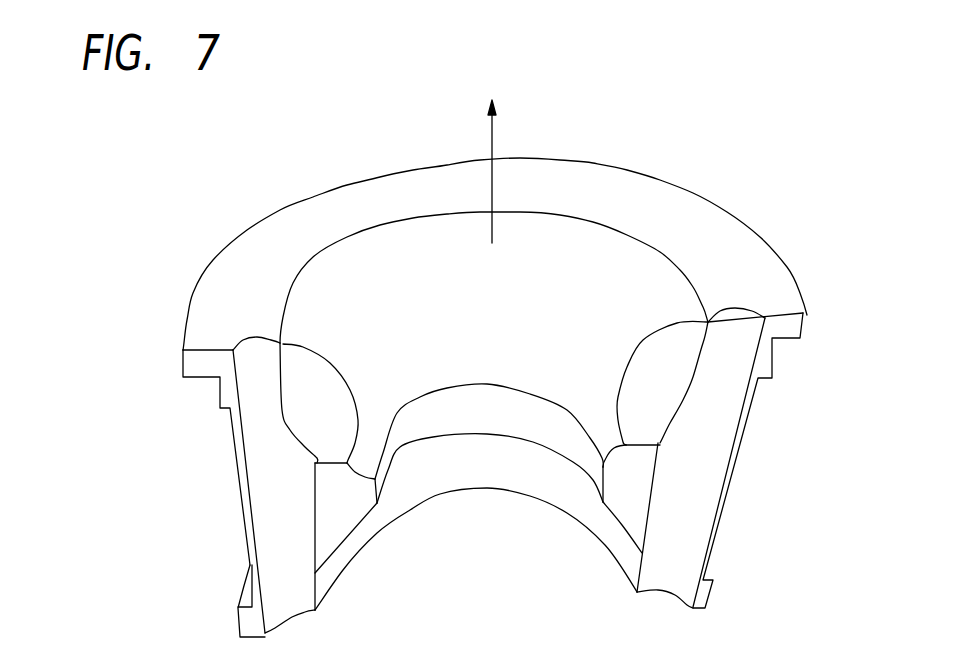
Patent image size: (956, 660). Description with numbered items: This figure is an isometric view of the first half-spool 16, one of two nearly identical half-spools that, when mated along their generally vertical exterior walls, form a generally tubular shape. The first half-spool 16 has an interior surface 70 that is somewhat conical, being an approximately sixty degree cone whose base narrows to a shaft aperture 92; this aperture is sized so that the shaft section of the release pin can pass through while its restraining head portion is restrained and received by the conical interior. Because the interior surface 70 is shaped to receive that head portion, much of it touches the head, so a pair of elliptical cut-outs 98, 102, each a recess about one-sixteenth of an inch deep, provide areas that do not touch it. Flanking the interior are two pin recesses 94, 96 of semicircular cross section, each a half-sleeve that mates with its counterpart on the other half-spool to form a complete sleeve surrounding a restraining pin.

The first half-spool 16 is at (693, 155).
The interior surface 70 is at (493, 303).
The shaft aperture 92 is at (498, 423).
The pin recess 94 is at (297, 539).
The pin recess 96 is at (713, 494).
The cut-out 98 is at (338, 410).
The cut-out 102 is at (682, 388).